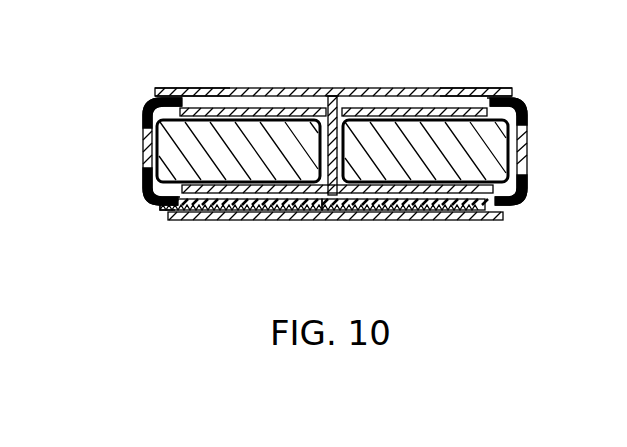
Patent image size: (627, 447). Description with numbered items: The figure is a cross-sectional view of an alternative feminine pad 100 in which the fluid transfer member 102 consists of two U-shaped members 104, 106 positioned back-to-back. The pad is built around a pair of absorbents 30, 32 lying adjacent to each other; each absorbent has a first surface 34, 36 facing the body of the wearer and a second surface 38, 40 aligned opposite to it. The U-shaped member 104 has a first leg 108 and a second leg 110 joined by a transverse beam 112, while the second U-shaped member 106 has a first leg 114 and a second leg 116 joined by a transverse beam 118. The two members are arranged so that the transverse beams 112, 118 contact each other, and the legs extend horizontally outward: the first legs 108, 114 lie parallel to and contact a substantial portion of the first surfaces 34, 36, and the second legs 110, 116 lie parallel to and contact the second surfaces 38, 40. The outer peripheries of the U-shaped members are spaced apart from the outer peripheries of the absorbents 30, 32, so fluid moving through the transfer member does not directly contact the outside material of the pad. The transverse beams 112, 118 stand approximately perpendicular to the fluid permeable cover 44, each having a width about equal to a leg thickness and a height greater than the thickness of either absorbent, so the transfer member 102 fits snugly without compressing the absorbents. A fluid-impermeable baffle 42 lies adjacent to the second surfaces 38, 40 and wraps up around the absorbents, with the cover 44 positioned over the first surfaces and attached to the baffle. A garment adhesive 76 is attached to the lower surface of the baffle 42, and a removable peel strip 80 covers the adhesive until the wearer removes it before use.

The feminine pad 100 is at (172, 46).
The absorbent 30 is at (148, 160).
The absorbent 32 is at (500, 157).
The first surface 34 is at (155, 103).
The first surface 36 is at (518, 104).
The second surface 38 is at (160, 198).
The second surface 40 is at (505, 206).
The fluid-impermeable baffle 42 is at (158, 200).
The fluid permeable cover 44 is at (437, 88).
The garment adhesive 76 is at (438, 222).
The removable peel strip 80 is at (330, 222).
The transfer member 102 is at (330, 84).
The U-shaped member 104 is at (267, 108).
The second U-shaped member 106 is at (387, 108).
The first leg 108 is at (190, 88).
The second leg 110 is at (212, 200).
The transverse beam 112 is at (342, 113).
The first leg 114 is at (478, 90).
The second leg 116 is at (470, 200).
The transverse beam 118 is at (330, 183).